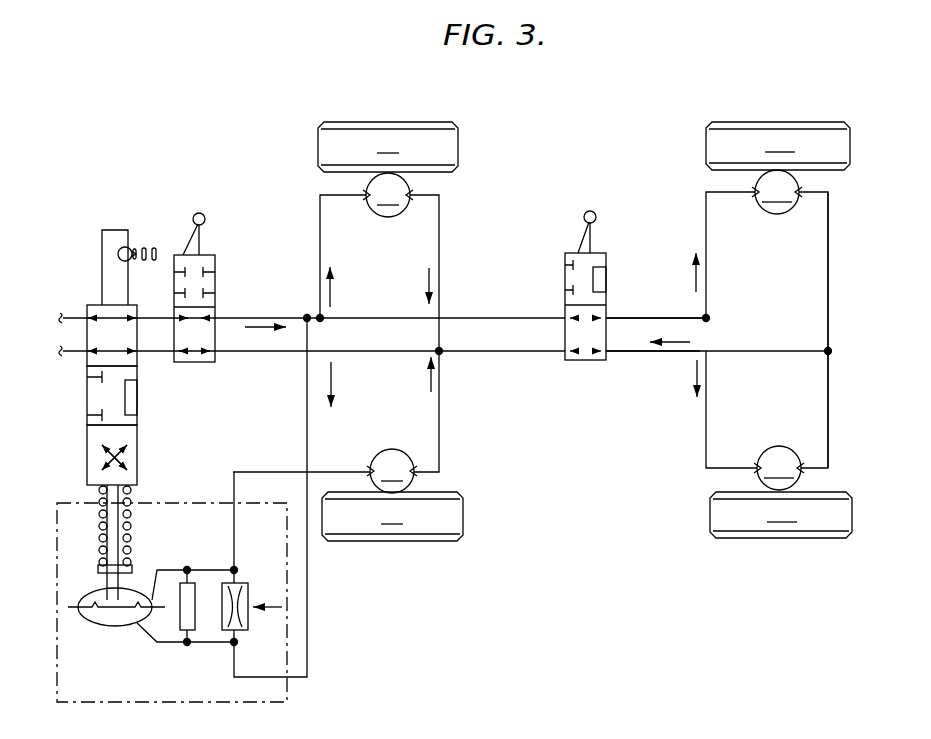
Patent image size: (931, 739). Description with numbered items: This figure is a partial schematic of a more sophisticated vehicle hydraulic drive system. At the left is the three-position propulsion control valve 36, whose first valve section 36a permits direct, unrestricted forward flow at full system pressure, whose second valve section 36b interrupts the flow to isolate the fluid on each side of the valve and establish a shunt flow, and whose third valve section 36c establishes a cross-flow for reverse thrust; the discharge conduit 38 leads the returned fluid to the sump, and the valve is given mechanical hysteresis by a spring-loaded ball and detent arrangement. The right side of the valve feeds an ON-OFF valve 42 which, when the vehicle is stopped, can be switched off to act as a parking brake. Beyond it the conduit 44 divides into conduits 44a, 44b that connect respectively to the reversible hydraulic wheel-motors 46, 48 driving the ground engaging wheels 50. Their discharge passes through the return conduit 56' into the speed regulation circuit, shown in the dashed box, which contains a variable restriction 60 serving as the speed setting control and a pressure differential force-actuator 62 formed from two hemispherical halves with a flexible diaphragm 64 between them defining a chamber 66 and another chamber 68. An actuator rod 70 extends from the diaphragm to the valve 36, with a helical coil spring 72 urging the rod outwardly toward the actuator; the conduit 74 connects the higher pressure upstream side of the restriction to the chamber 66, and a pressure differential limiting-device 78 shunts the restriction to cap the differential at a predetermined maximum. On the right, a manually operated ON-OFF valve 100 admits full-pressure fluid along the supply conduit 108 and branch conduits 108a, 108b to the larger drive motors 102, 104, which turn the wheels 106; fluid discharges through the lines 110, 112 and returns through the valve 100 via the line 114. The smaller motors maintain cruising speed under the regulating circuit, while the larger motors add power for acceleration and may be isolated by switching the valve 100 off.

The propulsion control valve 36 is at (125, 357).
The first valve section 36a is at (130, 347).
The second valve section 36b is at (122, 411).
The third valve section 36c is at (84, 467).
The discharge conduit 38 is at (143, 248).
The ON-OFF valve 42 is at (218, 243).
The conduit 44 is at (273, 317).
The conduit 44a is at (321, 242).
The conduit 44b is at (310, 435).
The reversible hydraulic wheel-motor 46 is at (388, 195).
The reversible hydraulic wheel-motor 48 is at (392, 471).
The ground engaging wheel 50 is at (390, 331).
The return conduit 56' is at (312, 366).
The variable restriction 60 is at (250, 590).
The pressure differential force-actuator 62 is at (93, 632).
The flexible diaphragm 64 is at (97, 612).
The chamber 66 is at (128, 617).
The chamber 68 is at (102, 598).
The actuator rod 70 is at (113, 526).
The helical coil spring 72 is at (131, 523).
The conduit 74 is at (202, 647).
The pressure differential limiting-device 78 is at (197, 593).
The ON-OFF valve 100 is at (607, 257).
The drive motor 102 is at (777, 192).
The drive motor 104 is at (779, 468).
The wheel 106 is at (779, 330).
The supply conduit 108 is at (670, 312).
The branch conduit 108a is at (707, 235).
The branch conduit 108b is at (708, 417).
The line 110 is at (830, 283).
The line 112 is at (830, 408).
The line 114 is at (627, 351).